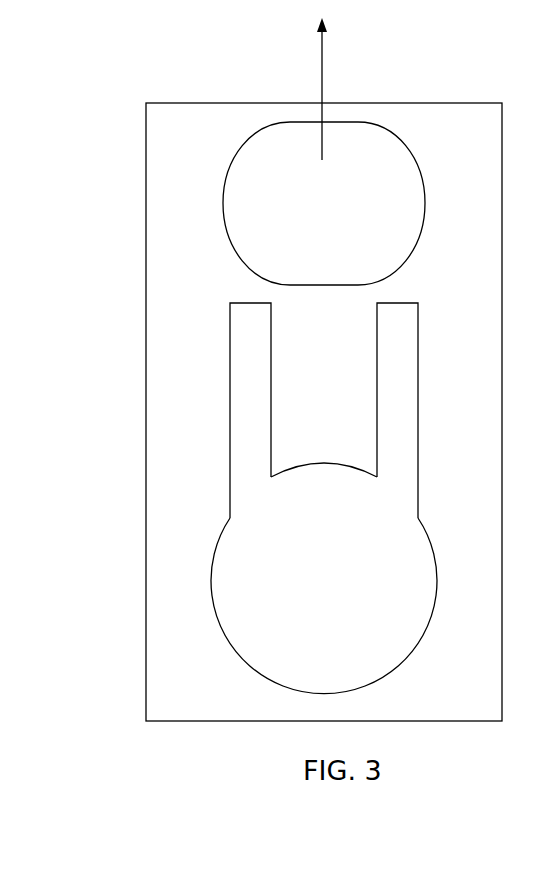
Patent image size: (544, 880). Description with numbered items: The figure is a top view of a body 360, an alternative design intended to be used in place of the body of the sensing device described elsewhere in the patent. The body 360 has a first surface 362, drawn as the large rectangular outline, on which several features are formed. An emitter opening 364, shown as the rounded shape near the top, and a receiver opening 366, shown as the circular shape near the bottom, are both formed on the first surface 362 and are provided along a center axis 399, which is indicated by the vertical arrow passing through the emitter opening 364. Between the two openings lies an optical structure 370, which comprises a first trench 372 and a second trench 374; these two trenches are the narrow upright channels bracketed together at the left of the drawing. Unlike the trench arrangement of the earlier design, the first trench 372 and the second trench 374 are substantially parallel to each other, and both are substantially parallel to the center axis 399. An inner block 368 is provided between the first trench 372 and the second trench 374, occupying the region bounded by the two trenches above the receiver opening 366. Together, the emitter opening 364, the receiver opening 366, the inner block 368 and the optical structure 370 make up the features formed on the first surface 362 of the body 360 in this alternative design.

The body 360 is at (190, 79).
The first surface 362 is at (154, 590).
The emitter opening 364 is at (363, 216).
The receiver opening 366 is at (363, 611).
The inner block 368 is at (353, 448).
The optical structure 370 is at (137, 300).
The first trench 372 is at (255, 430).
The second trench 374 is at (393, 415).
The center axis 399 is at (323, 55).